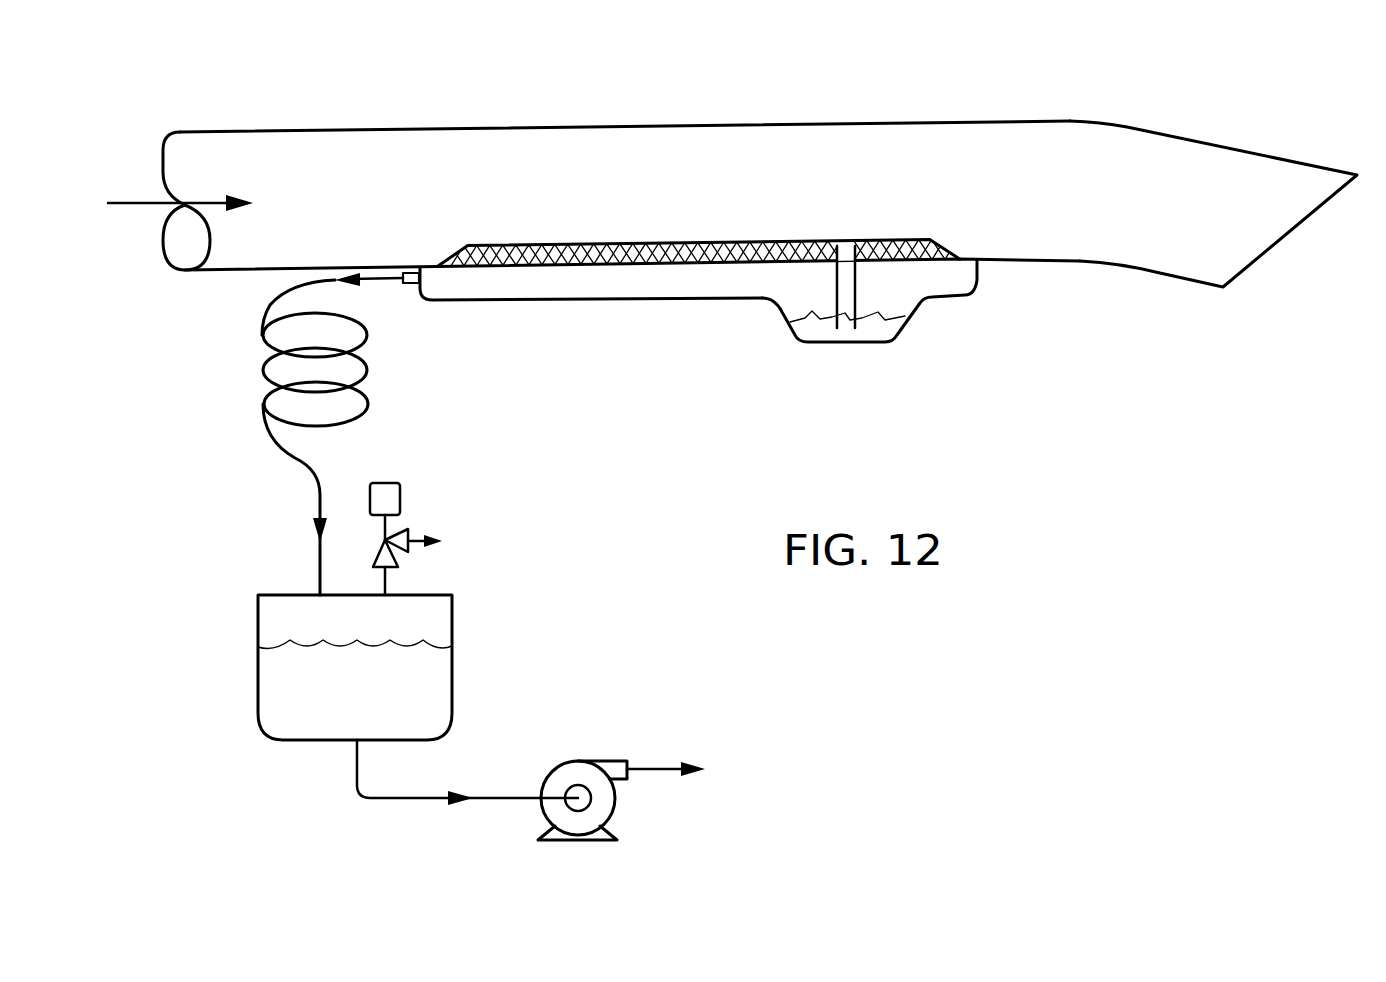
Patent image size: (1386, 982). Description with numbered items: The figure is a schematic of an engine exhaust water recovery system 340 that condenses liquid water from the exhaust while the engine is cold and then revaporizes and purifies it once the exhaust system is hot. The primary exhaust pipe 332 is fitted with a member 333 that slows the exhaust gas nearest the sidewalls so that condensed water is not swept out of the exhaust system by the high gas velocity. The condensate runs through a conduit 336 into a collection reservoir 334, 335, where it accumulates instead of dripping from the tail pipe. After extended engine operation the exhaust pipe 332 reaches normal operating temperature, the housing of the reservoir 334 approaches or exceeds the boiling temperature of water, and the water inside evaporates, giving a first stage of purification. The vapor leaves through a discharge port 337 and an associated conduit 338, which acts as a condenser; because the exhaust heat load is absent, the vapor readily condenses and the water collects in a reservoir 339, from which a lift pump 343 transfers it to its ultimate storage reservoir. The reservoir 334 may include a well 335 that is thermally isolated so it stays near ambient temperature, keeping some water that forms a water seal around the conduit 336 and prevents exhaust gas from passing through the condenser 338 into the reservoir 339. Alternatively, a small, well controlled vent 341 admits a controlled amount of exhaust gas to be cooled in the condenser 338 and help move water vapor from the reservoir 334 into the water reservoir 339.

The primary exhaust pipe 332 is at (283, 130).
The member 333 is at (638, 242).
The collection reservoir 334 is at (635, 302).
The well 335 is at (848, 343).
The conduit 336 is at (855, 290).
The discharge port 337 is at (405, 287).
The conduit 338 is at (368, 405).
The reservoir 339 is at (452, 625).
The engine exhaust water recovery system 340 is at (775, 96).
The vent 341 is at (405, 535).
The lift pump 343 is at (585, 760).